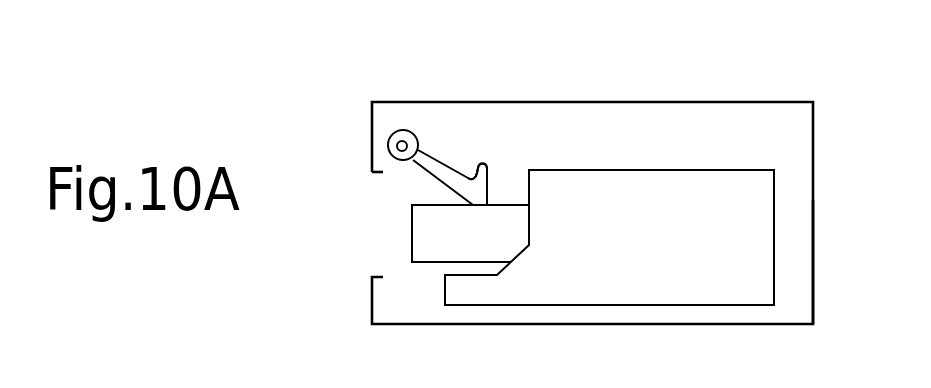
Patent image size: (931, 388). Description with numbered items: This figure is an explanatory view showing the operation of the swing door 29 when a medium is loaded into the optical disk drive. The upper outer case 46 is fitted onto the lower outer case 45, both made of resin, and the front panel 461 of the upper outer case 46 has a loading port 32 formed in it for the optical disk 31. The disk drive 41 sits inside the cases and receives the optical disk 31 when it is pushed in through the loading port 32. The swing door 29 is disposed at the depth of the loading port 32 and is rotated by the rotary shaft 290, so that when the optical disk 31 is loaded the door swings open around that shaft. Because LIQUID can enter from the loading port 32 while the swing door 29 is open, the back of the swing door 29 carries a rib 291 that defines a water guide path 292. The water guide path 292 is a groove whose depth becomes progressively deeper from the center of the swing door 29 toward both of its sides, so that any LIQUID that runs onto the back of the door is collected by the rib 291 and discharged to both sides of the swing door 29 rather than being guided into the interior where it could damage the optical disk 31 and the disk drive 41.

The swing door 29 is at (425, 176).
The optical disk 31 is at (437, 248).
The loading port 32 is at (372, 213).
The disk drive 41 is at (643, 168).
The lower outer case 45 is at (814, 283).
The upper outer case 46 is at (753, 101).
The front panel 461 is at (372, 113).
The rotary shaft 290 is at (402, 146).
The rib 291 is at (492, 157).
The water guide path 292 is at (472, 180).
The liquid LIQUID is at (458, 162).